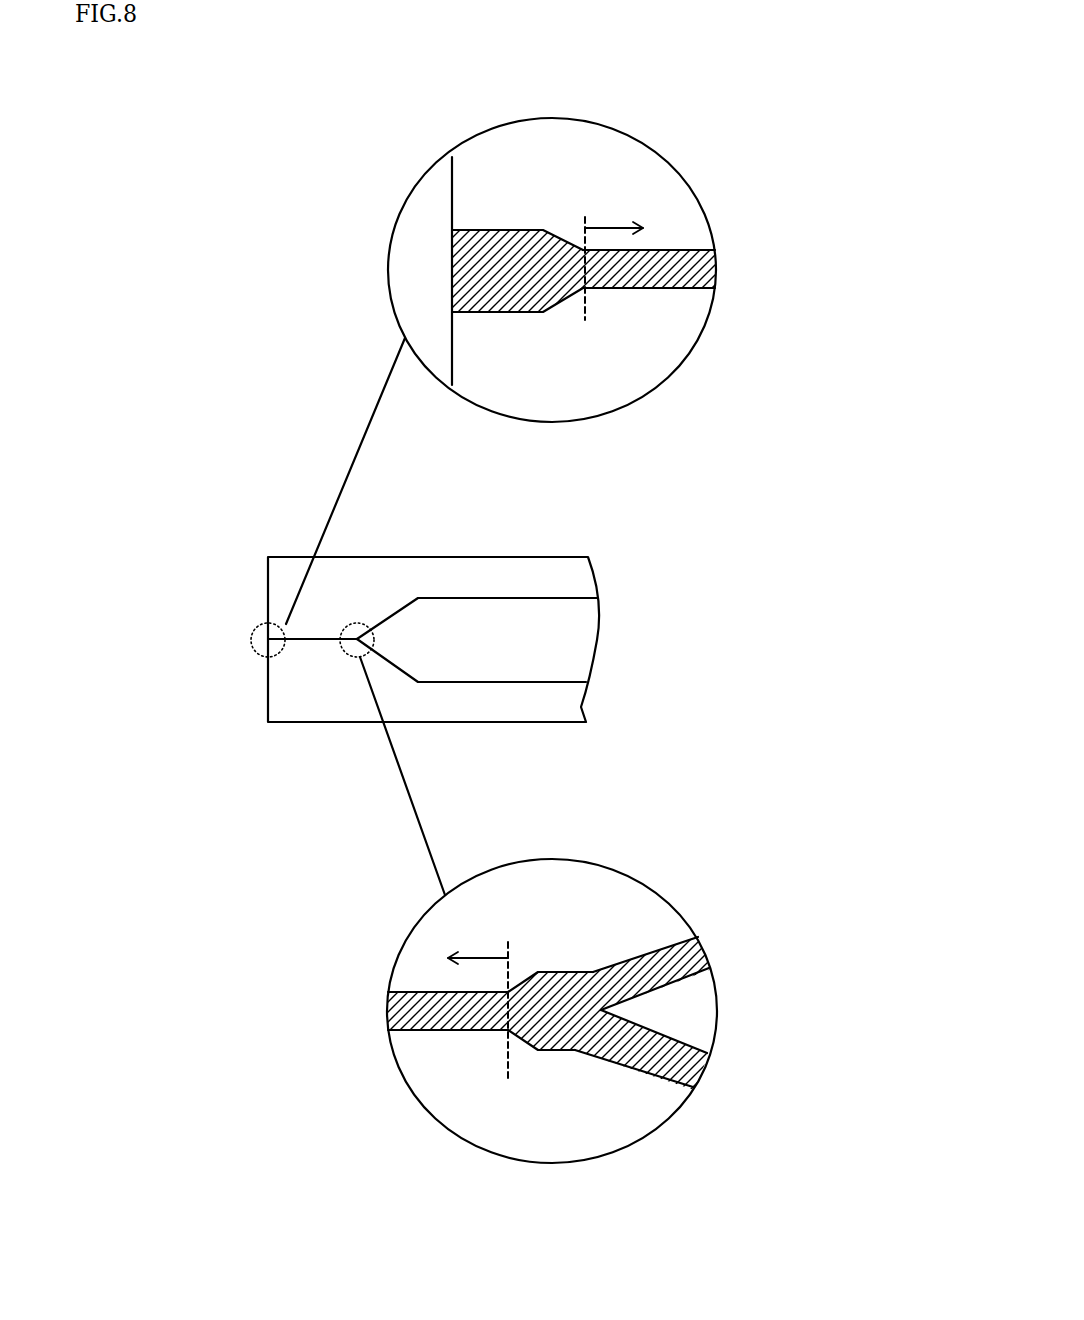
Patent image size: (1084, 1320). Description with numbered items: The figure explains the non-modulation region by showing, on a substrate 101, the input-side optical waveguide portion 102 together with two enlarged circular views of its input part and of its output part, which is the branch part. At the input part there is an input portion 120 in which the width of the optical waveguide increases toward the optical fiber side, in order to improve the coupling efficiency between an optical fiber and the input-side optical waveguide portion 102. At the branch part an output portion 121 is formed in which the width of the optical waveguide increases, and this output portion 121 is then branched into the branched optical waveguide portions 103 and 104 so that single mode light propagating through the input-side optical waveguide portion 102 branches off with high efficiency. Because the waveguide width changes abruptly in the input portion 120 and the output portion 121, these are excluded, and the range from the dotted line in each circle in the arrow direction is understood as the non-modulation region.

The substrate 101 is at (317, 693).
The input-side optical waveguide portion 102 is at (310, 639).
The branched optical waveguide portion 103 is at (530, 598).
The branched optical waveguide portion 104 is at (530, 682).
The input portion 120 is at (523, 257).
The output portion 121 is at (555, 1012).